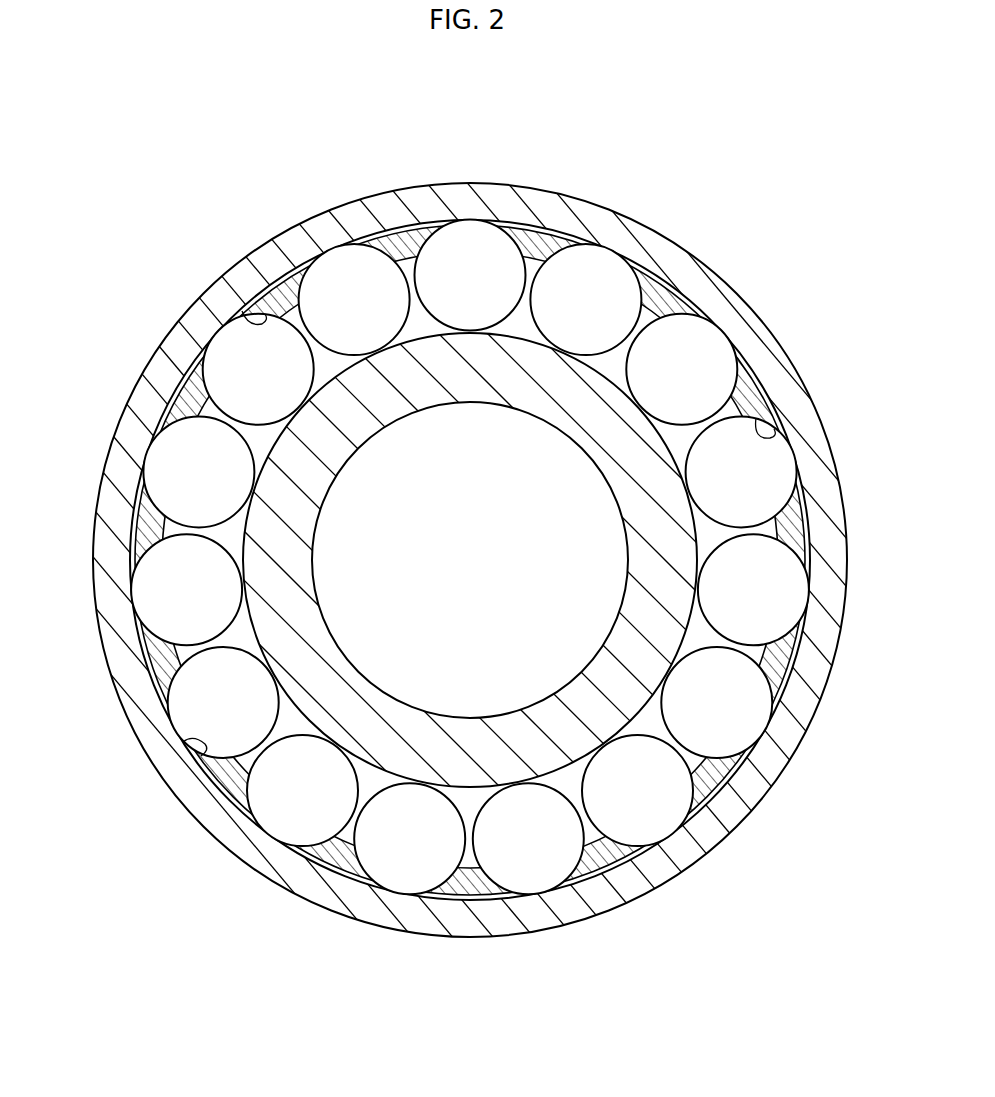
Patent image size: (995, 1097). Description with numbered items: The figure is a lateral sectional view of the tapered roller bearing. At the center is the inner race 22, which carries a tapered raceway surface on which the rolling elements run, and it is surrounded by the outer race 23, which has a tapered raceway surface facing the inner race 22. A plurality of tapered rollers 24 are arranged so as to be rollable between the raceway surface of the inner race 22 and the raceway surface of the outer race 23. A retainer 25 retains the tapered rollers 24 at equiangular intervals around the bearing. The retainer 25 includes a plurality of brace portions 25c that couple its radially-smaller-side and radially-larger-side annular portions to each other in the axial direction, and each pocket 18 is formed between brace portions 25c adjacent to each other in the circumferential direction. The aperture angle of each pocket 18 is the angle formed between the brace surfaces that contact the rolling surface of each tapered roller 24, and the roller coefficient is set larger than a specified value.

The pocket 18 is at (242, 311).
The inner race 22 is at (237, 543).
The outer race 23 is at (627, 207).
The tapered roller 24 is at (468, 240).
The retainer 25 is at (730, 770).
The brace portion 25c is at (286, 292).